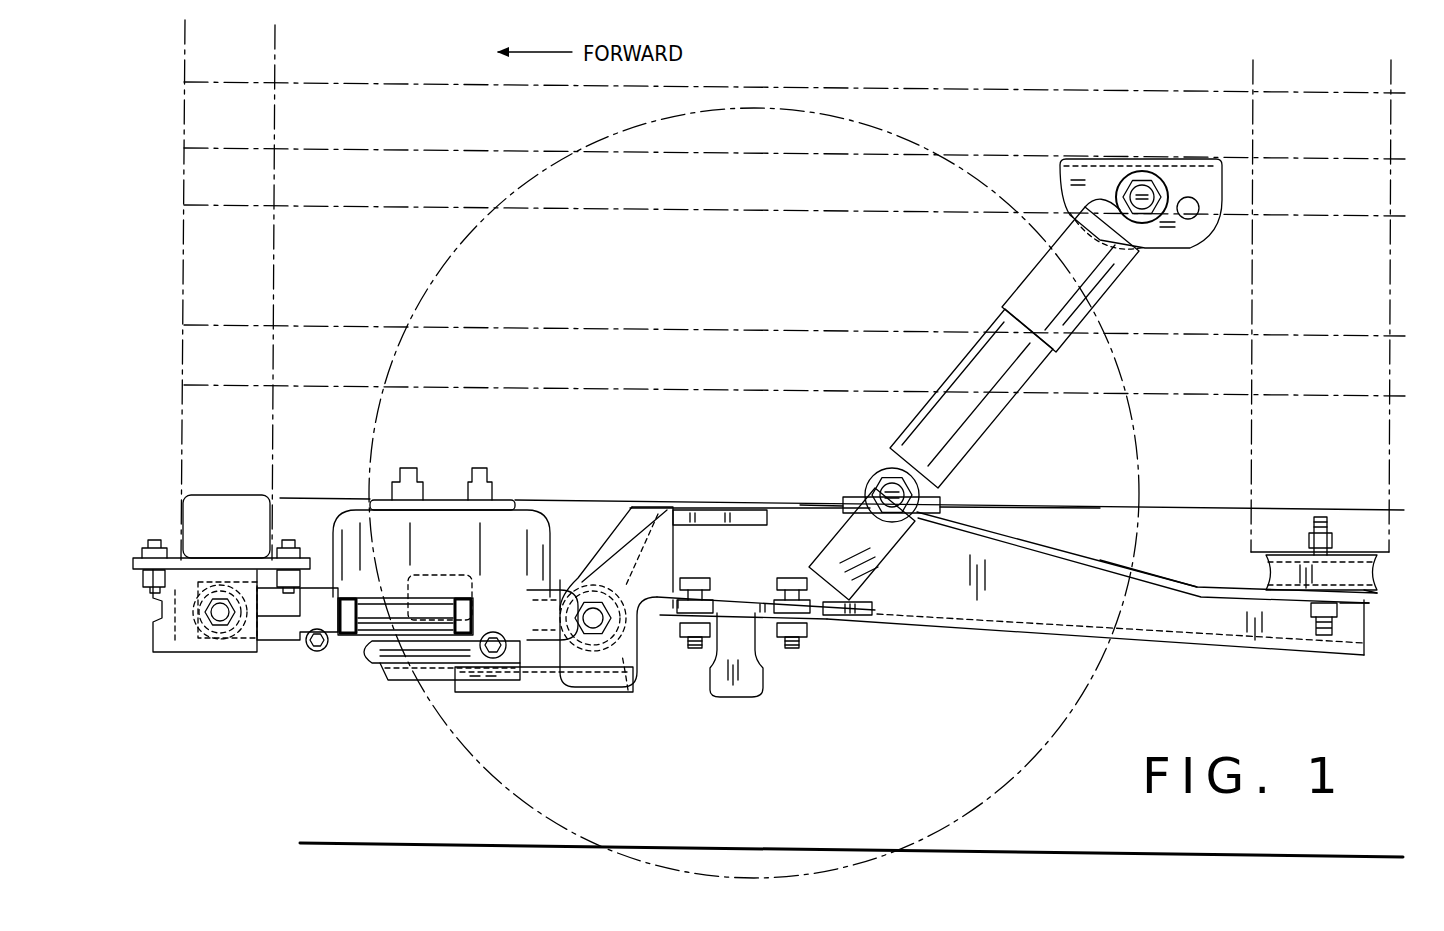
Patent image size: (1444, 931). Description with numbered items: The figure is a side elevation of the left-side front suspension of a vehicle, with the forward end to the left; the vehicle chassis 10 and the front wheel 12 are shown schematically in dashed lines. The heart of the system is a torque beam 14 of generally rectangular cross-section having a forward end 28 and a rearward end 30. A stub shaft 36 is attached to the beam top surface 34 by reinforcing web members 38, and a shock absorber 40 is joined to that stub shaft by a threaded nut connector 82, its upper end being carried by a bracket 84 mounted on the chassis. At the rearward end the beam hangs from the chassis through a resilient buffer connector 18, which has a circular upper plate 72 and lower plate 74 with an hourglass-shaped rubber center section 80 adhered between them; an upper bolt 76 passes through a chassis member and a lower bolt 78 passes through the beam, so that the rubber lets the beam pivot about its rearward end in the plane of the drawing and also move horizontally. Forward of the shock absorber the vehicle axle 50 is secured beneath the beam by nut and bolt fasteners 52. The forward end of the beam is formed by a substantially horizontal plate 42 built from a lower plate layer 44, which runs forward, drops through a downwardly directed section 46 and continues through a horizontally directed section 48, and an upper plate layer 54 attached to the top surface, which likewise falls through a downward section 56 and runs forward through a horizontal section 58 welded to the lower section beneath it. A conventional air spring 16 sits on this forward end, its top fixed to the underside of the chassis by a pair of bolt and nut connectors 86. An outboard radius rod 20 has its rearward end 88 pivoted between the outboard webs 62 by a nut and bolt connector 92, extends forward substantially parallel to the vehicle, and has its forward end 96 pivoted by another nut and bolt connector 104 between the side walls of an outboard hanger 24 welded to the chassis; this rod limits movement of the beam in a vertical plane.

The vehicle chassis 10 is at (183, 522).
The vehicle front wheel 12 is at (920, 137).
The torque beam 14 is at (1032, 532).
The air spring 16 is at (353, 535).
The buffer connector 18 is at (1394, 577).
The outboard radius rod 20 is at (353, 612).
The outboard hanger 24 is at (172, 638).
The beam forward end 28 is at (383, 688).
The beam rearward end 30 is at (1344, 667).
The beam top surface 34 is at (1174, 580).
The stub shaft 36 is at (878, 492).
The reinforcing web members 38 is at (898, 528).
The shock absorber 40 is at (1043, 300).
The plate 42 is at (436, 676).
The lower plate layer 44 is at (754, 581).
The downwardly directed section 46 is at (643, 650).
The horizontally directed section 48 is at (565, 692).
The vehicle axle 50 is at (753, 678).
The nut and bolt fasteners 52 is at (697, 578).
The upper plate layer 54 is at (679, 507).
The downward section 56 is at (635, 680).
The horizontal section 58 is at (533, 690).
The outboard webs 62 is at (597, 573).
The upper plate 72 is at (1361, 555).
The lower plate 74 is at (1369, 603).
The upper bolt 76 is at (1329, 527).
The lower bolt 78 is at (1327, 623).
The rubber center section 80 is at (1375, 588).
The threaded nut connector 82 is at (880, 470).
The bracket 84 is at (1080, 178).
The bolt and nut connectors 86 is at (409, 468).
The rearward end of outboard radius rod 88 is at (562, 590).
The nut and bolt connector 92 is at (594, 630).
The forward end of outboard radius rod 96 is at (267, 643).
The nut and bolt connector 104 is at (214, 632).